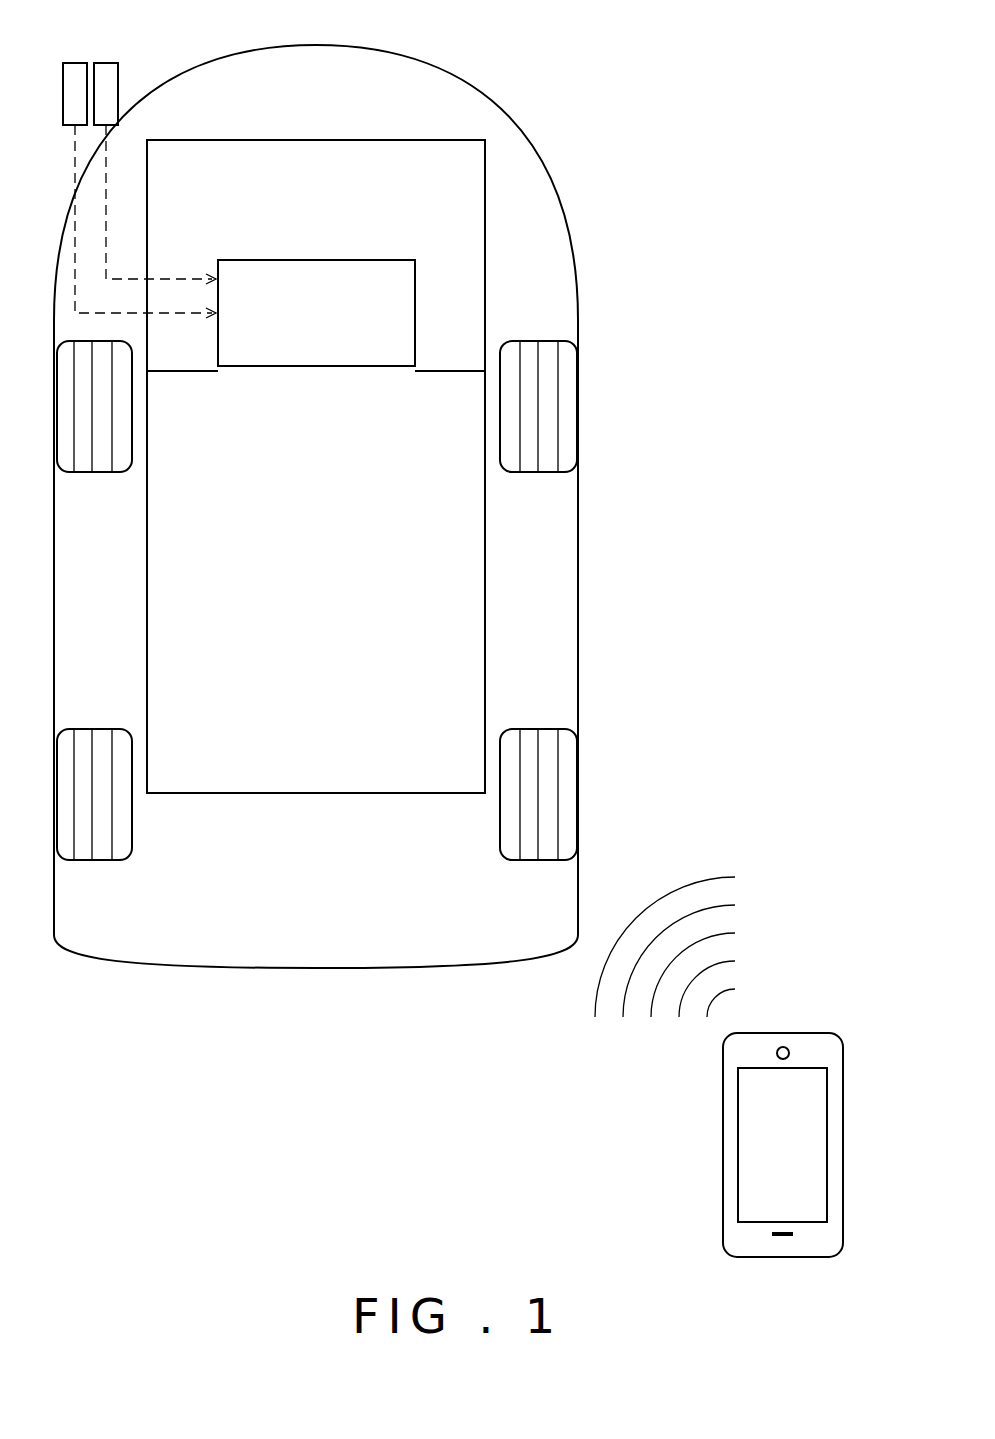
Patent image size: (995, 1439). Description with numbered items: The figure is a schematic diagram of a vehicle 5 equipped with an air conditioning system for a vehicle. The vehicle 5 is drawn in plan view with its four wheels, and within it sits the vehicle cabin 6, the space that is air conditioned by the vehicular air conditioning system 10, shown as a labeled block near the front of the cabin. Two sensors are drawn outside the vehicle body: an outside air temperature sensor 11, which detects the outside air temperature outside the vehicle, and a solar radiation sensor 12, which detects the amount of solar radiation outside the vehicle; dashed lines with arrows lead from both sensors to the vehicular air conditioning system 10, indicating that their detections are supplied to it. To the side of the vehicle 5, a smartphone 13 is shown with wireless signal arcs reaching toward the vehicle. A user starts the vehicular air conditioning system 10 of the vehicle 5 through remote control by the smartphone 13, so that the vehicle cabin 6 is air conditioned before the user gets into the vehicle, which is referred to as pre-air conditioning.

The vehicle 5 is at (578, 522).
The vehicle cabin 6 is at (316, 608).
The vehicular air conditioning system 10 is at (416, 295).
The outside air temperature sensor 11 is at (75, 63).
The solar radiation sensor 12 is at (108, 63).
The smartphone 13 is at (810, 1033).